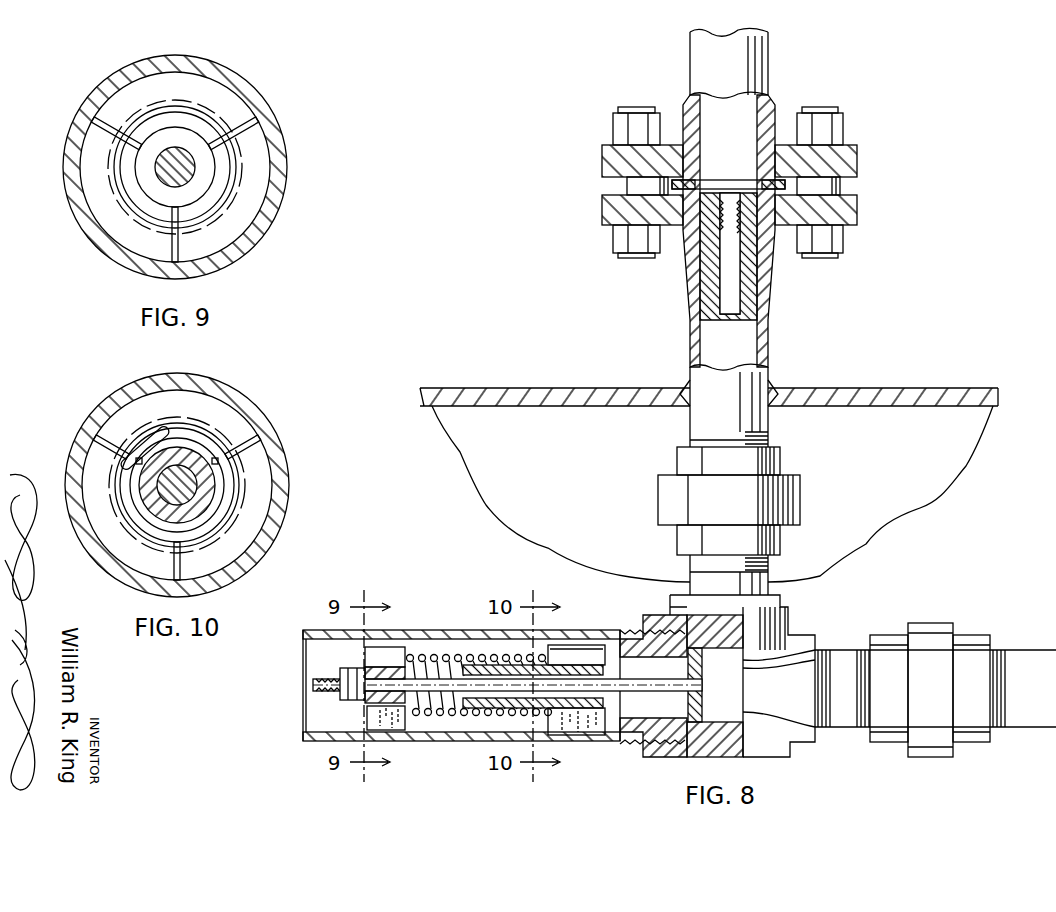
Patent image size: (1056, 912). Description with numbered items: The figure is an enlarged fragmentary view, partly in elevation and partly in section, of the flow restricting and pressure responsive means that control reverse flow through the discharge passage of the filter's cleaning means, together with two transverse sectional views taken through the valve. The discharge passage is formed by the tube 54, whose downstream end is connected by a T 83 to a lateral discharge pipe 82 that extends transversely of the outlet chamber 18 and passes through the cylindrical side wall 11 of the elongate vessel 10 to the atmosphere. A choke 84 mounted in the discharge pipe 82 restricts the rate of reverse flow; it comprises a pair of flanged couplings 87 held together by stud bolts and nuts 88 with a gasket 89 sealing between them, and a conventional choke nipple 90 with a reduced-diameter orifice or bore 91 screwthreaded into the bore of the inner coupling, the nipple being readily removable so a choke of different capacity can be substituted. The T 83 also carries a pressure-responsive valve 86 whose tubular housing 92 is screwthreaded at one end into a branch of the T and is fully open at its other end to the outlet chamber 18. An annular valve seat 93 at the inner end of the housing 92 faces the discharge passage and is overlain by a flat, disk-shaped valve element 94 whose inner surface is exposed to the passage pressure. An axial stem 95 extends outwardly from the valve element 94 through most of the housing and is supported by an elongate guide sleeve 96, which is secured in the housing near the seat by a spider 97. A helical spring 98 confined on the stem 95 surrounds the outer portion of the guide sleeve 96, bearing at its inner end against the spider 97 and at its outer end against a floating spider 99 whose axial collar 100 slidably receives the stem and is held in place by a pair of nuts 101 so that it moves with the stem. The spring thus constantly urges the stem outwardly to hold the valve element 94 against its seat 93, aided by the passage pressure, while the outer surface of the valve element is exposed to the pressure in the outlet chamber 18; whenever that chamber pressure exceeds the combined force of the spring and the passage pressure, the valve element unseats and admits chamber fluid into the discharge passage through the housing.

In FIG. 8, the elongate vessel 10 is at (962, 463).
In FIG. 8, the cylindrical side wall 11 is at (530, 388).
In FIG. 8, the outlet chamber 18 is at (546, 466).
In FIG. 8, the tube 54 is at (1022, 728).
In FIG. 8, the lateral discharge conductor or pipe 82 is at (769, 337).
In FIG. 8, the T 83 is at (786, 619).
In FIG. 8, the choke 84 is at (602, 160).
In FIG. 9, the pressure-responsive valve 86 is at (63, 167).
In FIG. 10, the pressure-responsive valve 86 is at (100, 406).
In FIG. 8, the pressure-responsive valve 86 is at (308, 739).
In FIG. 8, the flanged couplings 87 is at (857, 212).
In FIG. 8, the stud bolts and nuts 88 is at (826, 126).
In FIG. 8, the gasket 89 is at (700, 184).
In FIG. 8, the choke nipple 90 is at (705, 258).
In FIG. 8, the threaded bore 91 is at (740, 276).
In FIG. 9, the tubular body or housing 92 is at (286, 186).
In FIG. 10, the tubular body or housing 92 is at (284, 518).
In FIG. 8, the tubular body or housing 92 is at (322, 630).
In FIG. 8, the annular valve seat 93 is at (687, 714).
In FIG. 8, the valve element 94 is at (702, 656).
In FIG. 9, the axial rod or stem 95 is at (180, 168).
In FIG. 10, the axial rod or stem 95 is at (175, 486).
In FIG. 8, the axial rod or stem 95 is at (660, 683).
In FIG. 10, the elongate guide sleeve 96 is at (147, 503).
In FIG. 8, the elongate guide sleeve 96 is at (487, 704).
In FIG. 10, the spider 97 is at (262, 457).
In FIG. 8, the spider 97 is at (578, 737).
In FIG. 9, the helical spring 98 is at (203, 211).
In FIG. 10, the helical spring 98 is at (211, 526).
In FIG. 8, the helical spring 98 is at (440, 656).
In FIG. 9, the floating spider 99 is at (171, 243).
In FIG. 8, the floating spider 99 is at (400, 724).
In FIG. 9, the axial collar 100 is at (173, 137).
In FIG. 8, the axial collar 100 is at (370, 702).
In FIG. 8, the nuts 101 is at (352, 668).